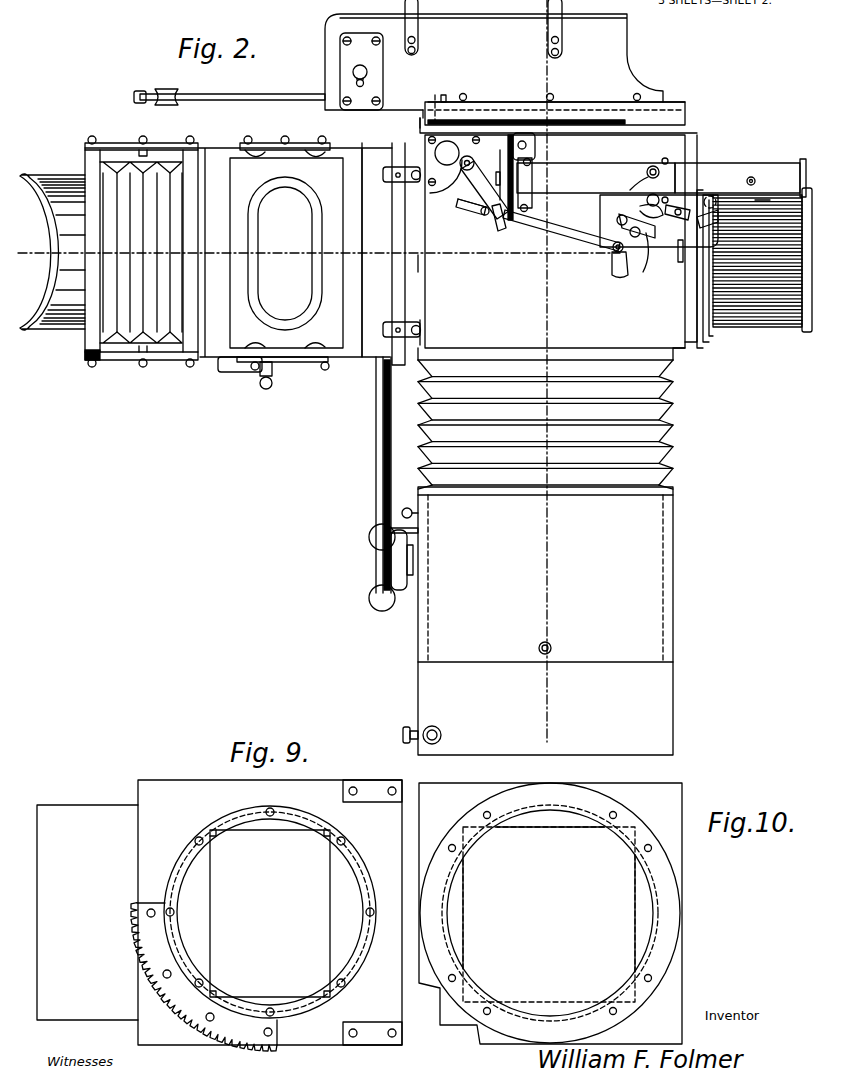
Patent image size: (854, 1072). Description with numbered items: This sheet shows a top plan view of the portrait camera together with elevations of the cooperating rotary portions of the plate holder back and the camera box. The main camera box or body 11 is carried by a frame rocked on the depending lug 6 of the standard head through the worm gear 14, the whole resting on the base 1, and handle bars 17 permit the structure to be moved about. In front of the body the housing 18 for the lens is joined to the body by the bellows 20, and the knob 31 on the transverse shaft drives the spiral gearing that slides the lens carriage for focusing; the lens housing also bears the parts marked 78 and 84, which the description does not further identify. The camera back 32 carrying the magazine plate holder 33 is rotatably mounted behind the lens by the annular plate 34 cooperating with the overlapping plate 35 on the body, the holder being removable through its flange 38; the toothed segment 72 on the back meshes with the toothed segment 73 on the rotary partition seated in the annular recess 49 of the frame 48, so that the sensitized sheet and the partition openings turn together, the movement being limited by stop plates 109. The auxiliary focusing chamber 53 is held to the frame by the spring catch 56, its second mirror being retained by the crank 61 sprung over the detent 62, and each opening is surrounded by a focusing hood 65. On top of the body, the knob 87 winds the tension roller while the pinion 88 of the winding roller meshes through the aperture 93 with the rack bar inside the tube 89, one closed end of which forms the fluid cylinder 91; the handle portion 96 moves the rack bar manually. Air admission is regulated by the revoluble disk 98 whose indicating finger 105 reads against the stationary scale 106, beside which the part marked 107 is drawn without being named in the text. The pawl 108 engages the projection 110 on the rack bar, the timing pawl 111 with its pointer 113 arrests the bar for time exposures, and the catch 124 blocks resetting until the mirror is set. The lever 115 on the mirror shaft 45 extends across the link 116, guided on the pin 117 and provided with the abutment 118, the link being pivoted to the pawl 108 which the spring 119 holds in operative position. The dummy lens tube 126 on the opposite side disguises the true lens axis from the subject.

In FIG. 2, the base 1 is at (408, 252).
In FIG. 2, the depending lug 6 is at (546, 745).
In FIG. 2, the main camera box or body 11 is at (561, 241).
In FIG. 10, the worm gear 14 is at (455, 1022).
In FIG. 2, the handle bars 17 is at (383, 428).
In FIG. 2, the housing 18 is at (537, 621).
In FIG. 2, the bellows 20 is at (675, 446).
In FIG. 2, the knob 31 is at (400, 565).
In FIG. 2, the camera back 32 is at (683, 119).
In FIG. 9, the camera back 32 is at (270, 912).
In FIG. 2, the plate or film holder 33 is at (494, 55).
In FIG. 9, the plate or film holder 33 is at (87, 912).
In FIG. 9, the annular plate 34 is at (370, 884).
In FIG. 10, the plate 35 is at (663, 881).
In FIG. 2, the flange 38 is at (512, 101).
In FIG. 2, the mirror shaft 45 is at (473, 187).
In FIG. 2, the frame 48 is at (409, 360).
In FIG. 2, the annular recess 49 is at (419, 264).
In FIG. 2, the auxiliary focusing chamber 53 is at (372, 352).
In FIG. 2, the spring catch 56 is at (406, 330).
In FIG. 2, the crank 61 is at (266, 390).
In FIG. 2, the detent 62 is at (273, 373).
In FIG. 2, the focusing hood 65 is at (214, 263).
In FIG. 2, the toothed segment 72 is at (438, 98).
In FIG. 9, the toothed segment 72 is at (248, 1031).
In FIG. 2, the toothed segment 73 is at (420, 128).
In FIG. 2, the box panel 78 is at (620, 715).
In FIG. 2, the screw 84 is at (402, 729).
In FIG. 2, the knob 87 is at (454, 165).
In FIG. 2, the pinion 88 is at (653, 165).
In FIG. 2, the tube 89 is at (596, 179).
In FIG. 2, the fluid cylinder 91 is at (780, 166).
In FIG. 2, the aperture 93 is at (637, 185).
In FIG. 2, the handle portion 96 is at (660, 198).
In FIG. 2, the revoluble disk 98 is at (500, 177).
In FIG. 2, the indicating finger 105 is at (545, 211).
In FIG. 2, the stationary scale 106 is at (528, 176).
In FIG. 2, the bracket 107 is at (530, 147).
In FIG. 2, the pawl 108 is at (640, 206).
In FIG. 2, the stop plates 109 is at (690, 127).
In FIG. 9, the stop plates 109 is at (377, 799).
In FIG. 2, the projection 110 is at (653, 221).
In FIG. 2, the timing pawl 111 is at (754, 268).
In FIG. 2, the pointer 113 is at (680, 262).
In FIG. 2, the lever 115 is at (500, 233).
In FIG. 2, the link 116 is at (553, 233).
In FIG. 2, the pin 117 is at (482, 215).
In FIG. 2, the abutment 118 is at (455, 214).
In FIG. 2, the spring 119 is at (645, 251).
In FIG. 2, the catch 124 is at (760, 201).
In FIG. 2, the dummy lens or lens tube 126 is at (748, 246).